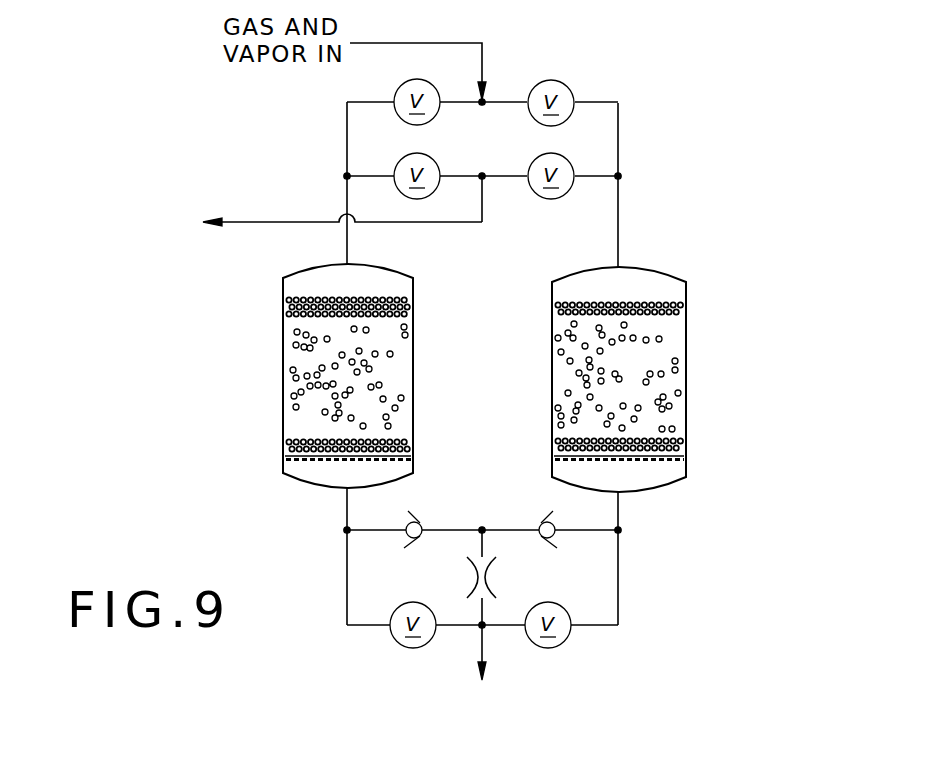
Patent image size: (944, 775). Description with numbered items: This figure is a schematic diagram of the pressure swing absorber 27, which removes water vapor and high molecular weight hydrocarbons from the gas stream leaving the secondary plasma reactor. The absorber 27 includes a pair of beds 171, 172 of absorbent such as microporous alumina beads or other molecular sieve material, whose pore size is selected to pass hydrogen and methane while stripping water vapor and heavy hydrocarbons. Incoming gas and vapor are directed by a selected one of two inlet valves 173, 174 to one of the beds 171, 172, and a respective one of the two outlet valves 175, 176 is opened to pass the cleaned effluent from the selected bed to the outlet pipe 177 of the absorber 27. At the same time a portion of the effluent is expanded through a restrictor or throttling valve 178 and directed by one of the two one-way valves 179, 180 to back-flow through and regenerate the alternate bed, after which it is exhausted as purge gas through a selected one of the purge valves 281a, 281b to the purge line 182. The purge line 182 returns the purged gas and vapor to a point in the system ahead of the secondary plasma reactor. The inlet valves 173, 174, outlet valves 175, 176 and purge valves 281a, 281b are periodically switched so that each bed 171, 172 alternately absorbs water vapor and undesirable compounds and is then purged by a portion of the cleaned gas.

The pressure swing absorber 27 is at (720, 293).
The first absorbent bed 171 is at (283, 362).
The second absorbent bed 172 is at (686, 368).
The first inlet valve 173 is at (401, 86).
The second inlet valve 174 is at (568, 86).
The first outlet valve 175 is at (397, 641).
The second outlet valve 176 is at (565, 641).
The outlet pipe 177 is at (473, 652).
The restrictor or throttling valve 178 is at (489, 585).
The first one-way valve 179 is at (420, 519).
The second one-way valve 180 is at (543, 519).
The purge line 182 is at (267, 223).
The first purge valve 281a is at (433, 160).
The second purge valve 281b is at (539, 198).